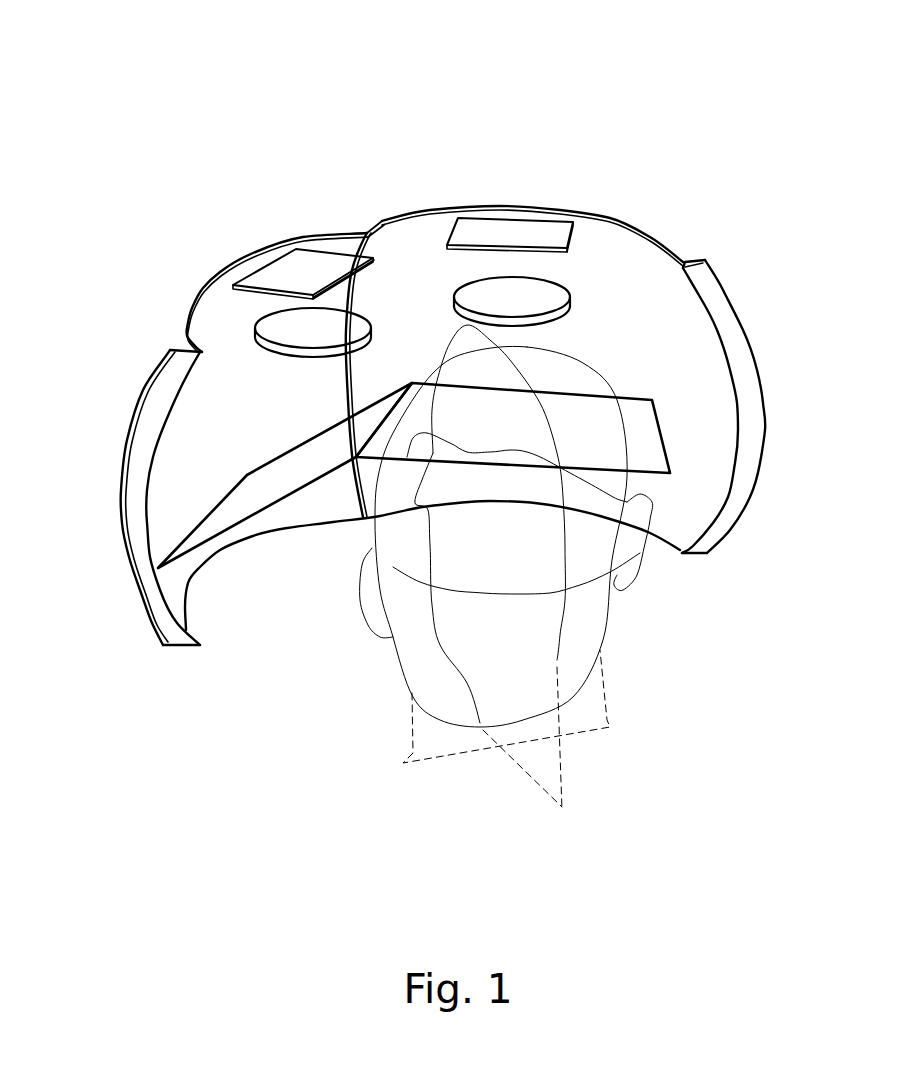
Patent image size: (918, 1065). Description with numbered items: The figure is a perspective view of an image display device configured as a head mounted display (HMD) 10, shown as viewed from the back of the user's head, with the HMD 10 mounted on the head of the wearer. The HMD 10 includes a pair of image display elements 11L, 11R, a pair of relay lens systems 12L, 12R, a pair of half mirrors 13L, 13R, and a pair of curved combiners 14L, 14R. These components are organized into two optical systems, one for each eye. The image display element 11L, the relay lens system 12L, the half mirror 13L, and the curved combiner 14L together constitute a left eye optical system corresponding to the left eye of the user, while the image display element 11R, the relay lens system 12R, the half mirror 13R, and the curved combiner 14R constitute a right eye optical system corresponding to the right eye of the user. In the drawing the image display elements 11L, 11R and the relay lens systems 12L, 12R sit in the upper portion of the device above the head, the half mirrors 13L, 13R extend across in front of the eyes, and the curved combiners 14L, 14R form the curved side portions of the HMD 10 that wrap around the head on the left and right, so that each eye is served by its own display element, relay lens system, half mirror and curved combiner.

The head mounted display 10 is at (620, 92).
The image display element 11L is at (325, 260).
The image display element 11R is at (513, 227).
The relay lens system 12L is at (280, 327).
The relay lens system 12R is at (560, 295).
The half mirror 13L is at (218, 525).
The half mirror 13R is at (650, 437).
The curved combiner 14L is at (198, 280).
The curved combiner 14R is at (657, 238).